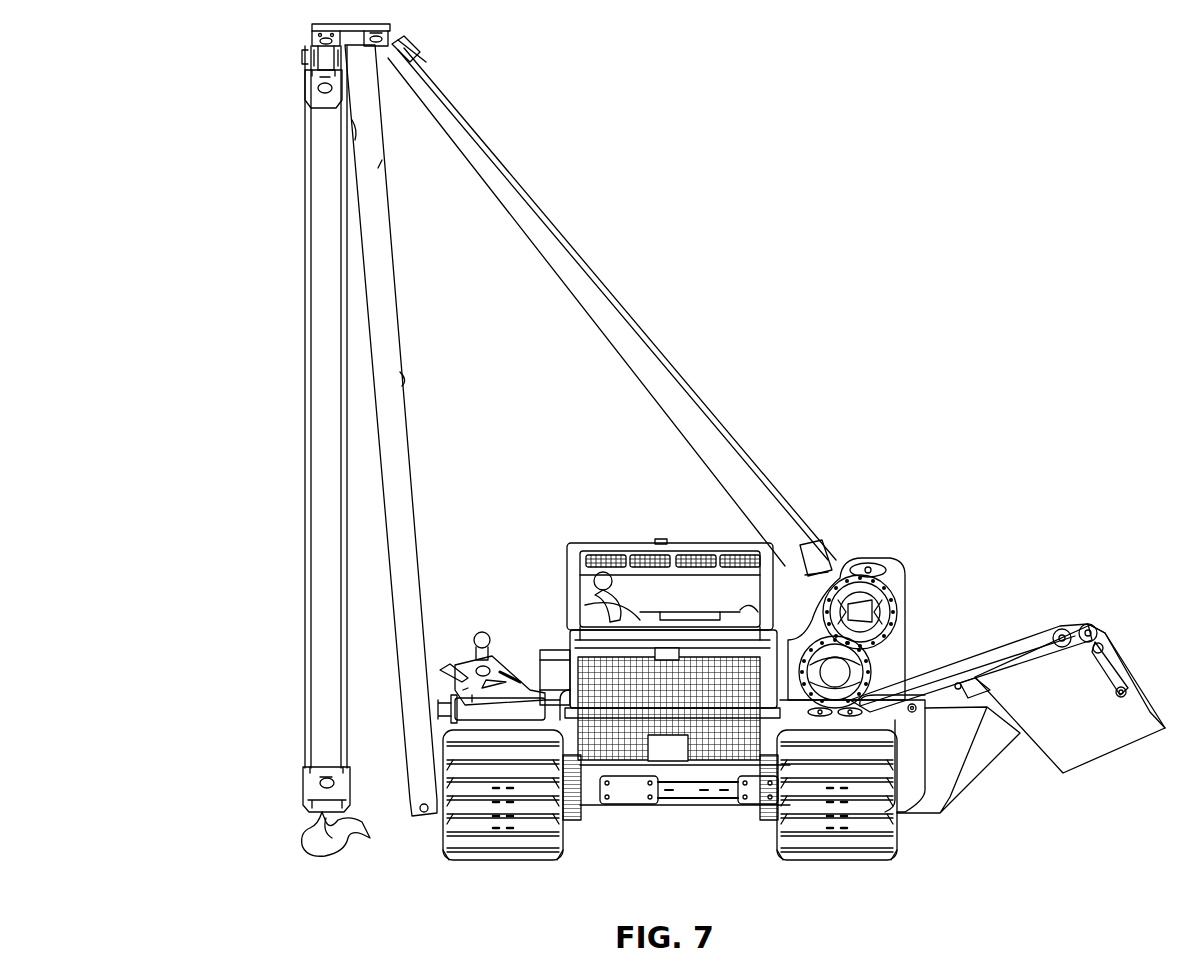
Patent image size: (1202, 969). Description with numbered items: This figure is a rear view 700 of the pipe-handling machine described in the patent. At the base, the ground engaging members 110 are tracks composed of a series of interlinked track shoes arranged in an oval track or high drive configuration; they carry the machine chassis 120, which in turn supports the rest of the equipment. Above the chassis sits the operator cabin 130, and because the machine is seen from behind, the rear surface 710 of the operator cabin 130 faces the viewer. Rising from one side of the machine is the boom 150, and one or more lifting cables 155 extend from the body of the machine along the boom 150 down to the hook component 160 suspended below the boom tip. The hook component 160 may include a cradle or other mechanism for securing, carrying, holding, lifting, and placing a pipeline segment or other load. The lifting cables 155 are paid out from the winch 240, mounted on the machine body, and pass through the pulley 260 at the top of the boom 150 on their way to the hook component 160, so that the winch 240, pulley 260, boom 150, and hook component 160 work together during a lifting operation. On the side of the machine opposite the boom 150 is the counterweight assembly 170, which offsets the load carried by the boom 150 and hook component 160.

The pipe layer machine system 700 is at (172, 52).
The pulley 260 is at (305, 96).
The lifting cables 155 is at (312, 290).
The boom 150 is at (388, 246).
The hook component 160 is at (316, 818).
The operator cabin 130 is at (596, 522).
The rear surface 710 is at (570, 574).
The winch 240 is at (903, 590).
The machine chassis 120 is at (705, 822).
The ground engaging members 110 is at (530, 860).
The counterweight assembly 170 is at (1072, 772).